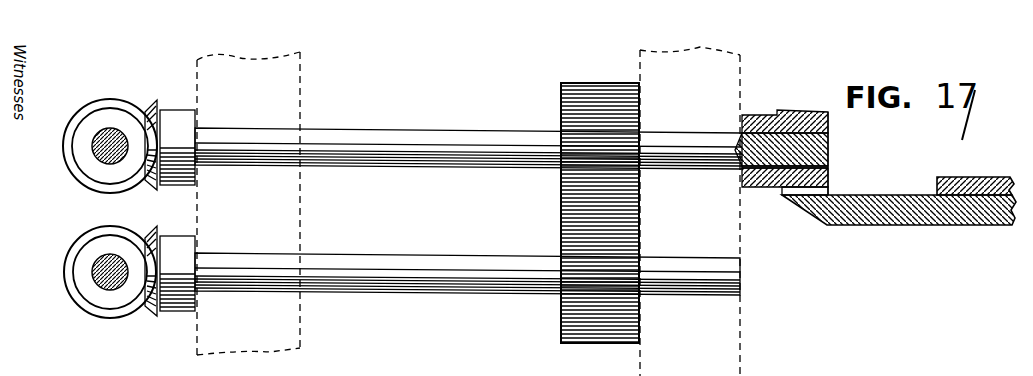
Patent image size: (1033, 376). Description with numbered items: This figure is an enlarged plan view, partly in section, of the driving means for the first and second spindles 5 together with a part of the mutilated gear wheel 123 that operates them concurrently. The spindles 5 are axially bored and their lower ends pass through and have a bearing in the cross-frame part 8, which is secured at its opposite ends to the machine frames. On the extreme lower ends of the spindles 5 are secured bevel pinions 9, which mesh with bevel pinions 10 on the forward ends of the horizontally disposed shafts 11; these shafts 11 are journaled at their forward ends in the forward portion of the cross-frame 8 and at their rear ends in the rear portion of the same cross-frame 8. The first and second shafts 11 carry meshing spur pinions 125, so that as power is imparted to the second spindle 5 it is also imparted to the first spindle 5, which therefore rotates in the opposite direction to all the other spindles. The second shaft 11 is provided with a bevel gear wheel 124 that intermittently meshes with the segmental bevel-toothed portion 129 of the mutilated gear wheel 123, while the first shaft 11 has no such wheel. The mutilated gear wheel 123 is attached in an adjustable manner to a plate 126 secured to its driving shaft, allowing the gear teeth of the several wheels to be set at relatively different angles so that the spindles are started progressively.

The spindle 5 is at (95, 147).
The cross-frame part 8 is at (270, 223).
The bevel pinion 9 is at (94, 170).
The bevel pinion 10 is at (178, 237).
The horizontally disposed shaft 11 is at (508, 138).
The mutilated gear wheel 123 is at (872, 208).
The bevel gear wheel 124 is at (830, 128).
The spur pinion 125 is at (561, 225).
The plate 126 is at (975, 172).
The segmental bevel-toothed portion 129 is at (803, 191).